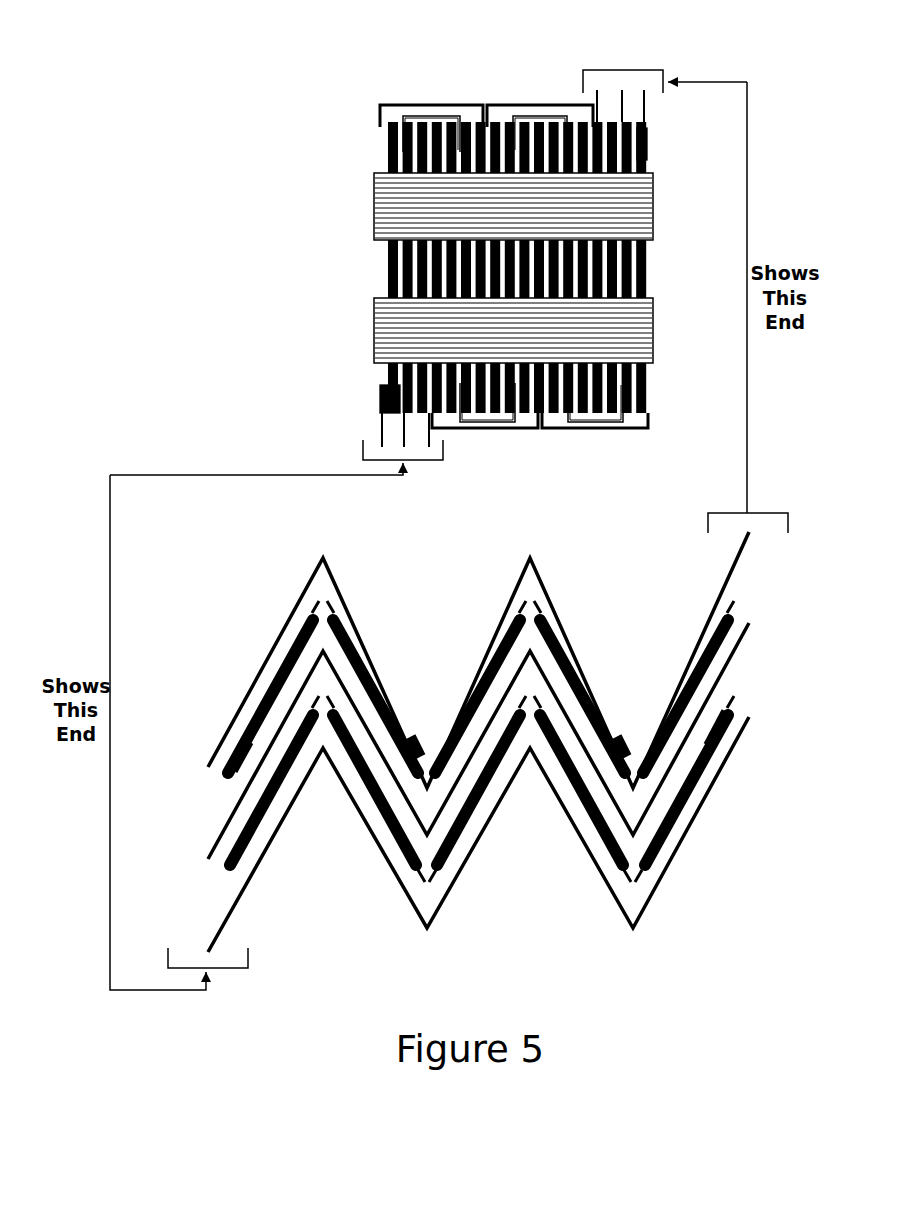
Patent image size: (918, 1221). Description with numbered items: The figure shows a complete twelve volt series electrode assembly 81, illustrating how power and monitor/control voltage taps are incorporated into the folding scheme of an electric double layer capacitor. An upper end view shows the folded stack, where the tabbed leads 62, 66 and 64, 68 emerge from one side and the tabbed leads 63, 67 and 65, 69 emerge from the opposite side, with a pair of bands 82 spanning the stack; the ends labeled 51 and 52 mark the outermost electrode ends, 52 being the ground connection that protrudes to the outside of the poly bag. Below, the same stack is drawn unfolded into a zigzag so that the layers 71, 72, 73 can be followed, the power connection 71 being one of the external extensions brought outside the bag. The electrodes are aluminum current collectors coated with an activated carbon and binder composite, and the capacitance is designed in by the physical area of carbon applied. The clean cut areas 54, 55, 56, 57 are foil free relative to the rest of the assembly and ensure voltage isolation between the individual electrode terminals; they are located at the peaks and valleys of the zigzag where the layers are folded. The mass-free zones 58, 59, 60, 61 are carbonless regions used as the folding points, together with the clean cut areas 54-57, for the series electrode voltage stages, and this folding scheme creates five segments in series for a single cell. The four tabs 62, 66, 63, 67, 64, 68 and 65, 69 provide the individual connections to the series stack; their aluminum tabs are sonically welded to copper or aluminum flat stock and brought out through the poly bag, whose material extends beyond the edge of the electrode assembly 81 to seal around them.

The first electrode tab end 51 is at (370, 398).
The ground 52 is at (656, 135).
The clean cut area 54 is at (327, 596).
The clean cut area 55 is at (438, 887).
The clean cut area 56 is at (526, 596).
The clean cut area 57 is at (645, 887).
The mass-free zone 58 is at (323, 722).
The mass-free zone 59 is at (427, 773).
The mass-free zone 60 is at (530, 722).
The mass-free zone 61 is at (633, 773).
The tabbed lead 62 is at (431, 96).
The tabbed lead 63 is at (485, 434).
The tabbed lead 64 is at (541, 96).
The tabbed lead 65 is at (597, 434).
The tabbed lead 66 is at (337, 749).
The tabbed lead 67 is at (443, 740).
The tabbed lead 68 is at (543, 749).
The tabbed lead 69 is at (650, 740).
The power 71 is at (209, 741).
The second separator layer 72 is at (209, 834).
The third separator layer 73 is at (209, 926).
The electrode assembly 81 is at (656, 270).
The insulating bands 82 is at (366, 207).